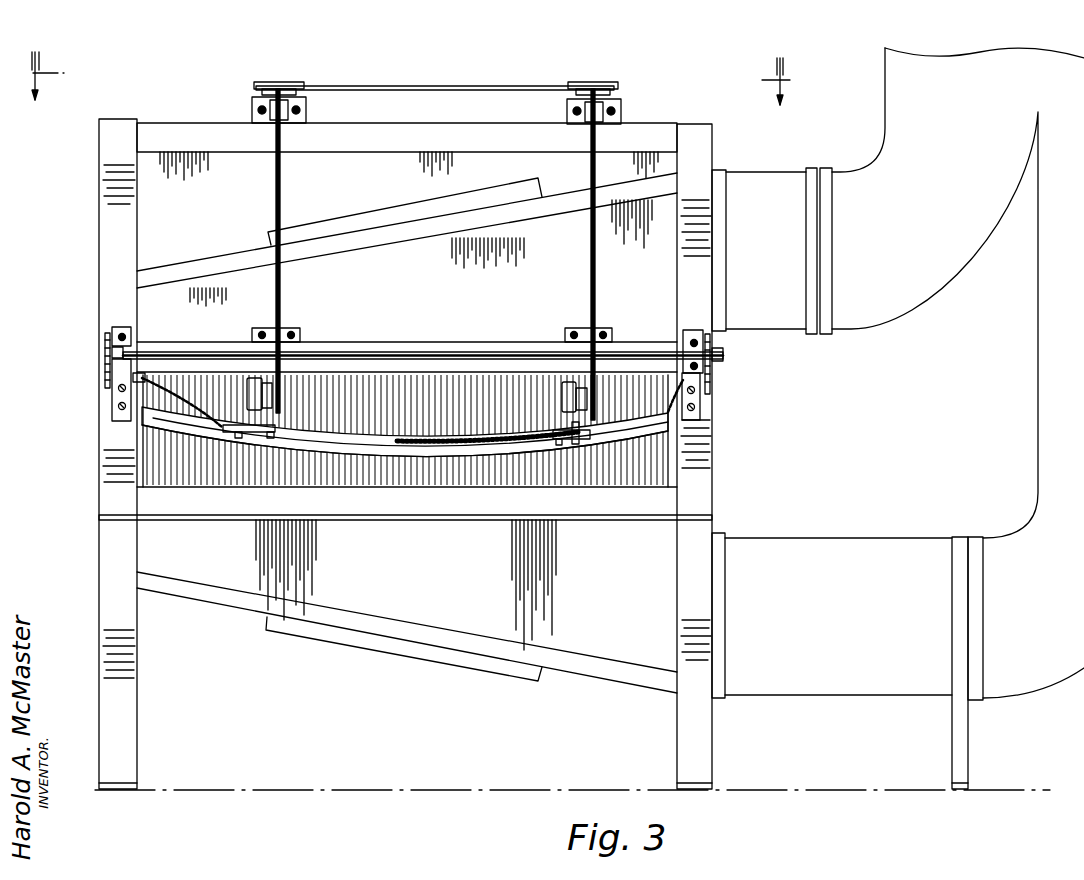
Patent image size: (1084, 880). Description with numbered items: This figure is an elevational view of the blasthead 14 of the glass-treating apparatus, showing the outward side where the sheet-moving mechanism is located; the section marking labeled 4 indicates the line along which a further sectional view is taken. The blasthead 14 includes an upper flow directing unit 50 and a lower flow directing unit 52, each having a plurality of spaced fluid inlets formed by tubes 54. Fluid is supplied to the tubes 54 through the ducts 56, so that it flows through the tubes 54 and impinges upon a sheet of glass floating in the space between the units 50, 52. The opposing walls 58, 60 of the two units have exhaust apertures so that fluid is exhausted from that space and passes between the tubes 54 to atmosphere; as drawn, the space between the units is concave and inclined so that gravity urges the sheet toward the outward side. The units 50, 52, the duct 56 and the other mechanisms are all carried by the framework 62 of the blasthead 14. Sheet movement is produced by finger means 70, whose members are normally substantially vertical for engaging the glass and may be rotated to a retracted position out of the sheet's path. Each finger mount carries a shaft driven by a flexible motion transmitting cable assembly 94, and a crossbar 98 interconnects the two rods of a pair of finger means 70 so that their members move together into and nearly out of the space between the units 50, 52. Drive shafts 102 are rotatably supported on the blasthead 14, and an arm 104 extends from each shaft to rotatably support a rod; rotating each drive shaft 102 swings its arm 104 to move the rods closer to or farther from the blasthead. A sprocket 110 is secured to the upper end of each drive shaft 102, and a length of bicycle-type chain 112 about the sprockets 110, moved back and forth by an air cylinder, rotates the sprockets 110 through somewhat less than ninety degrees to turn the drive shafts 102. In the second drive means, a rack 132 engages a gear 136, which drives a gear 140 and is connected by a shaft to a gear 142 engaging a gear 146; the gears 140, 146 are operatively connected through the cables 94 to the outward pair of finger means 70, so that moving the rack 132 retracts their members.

The blasthead 14 is at (70, 504).
The upper flow directing unit 50 is at (447, 352).
The lower flow directing unit 52 is at (428, 466).
The tubes 54 is at (381, 378).
The ducts 56 is at (456, 240).
The opposing wall 58 is at (146, 416).
The opposing wall 60 is at (147, 432).
The framework 62 is at (688, 130).
The finger means 70 is at (240, 437).
The flexible motion transmitting cable assembly 94 is at (166, 376).
The crossbar 98 is at (475, 422).
The drive shaft 102 is at (631, 240).
The arm 104 is at (272, 378).
The sprocket 110 is at (272, 82).
The bicycle-type chain 112 is at (433, 86).
The rack 132 is at (106, 333).
The gear 136 is at (112, 352).
The gear 140 is at (112, 384).
The gear 142 is at (723, 355).
The gear 146 is at (712, 385).
The section line 4- 4 is at (400, 91).